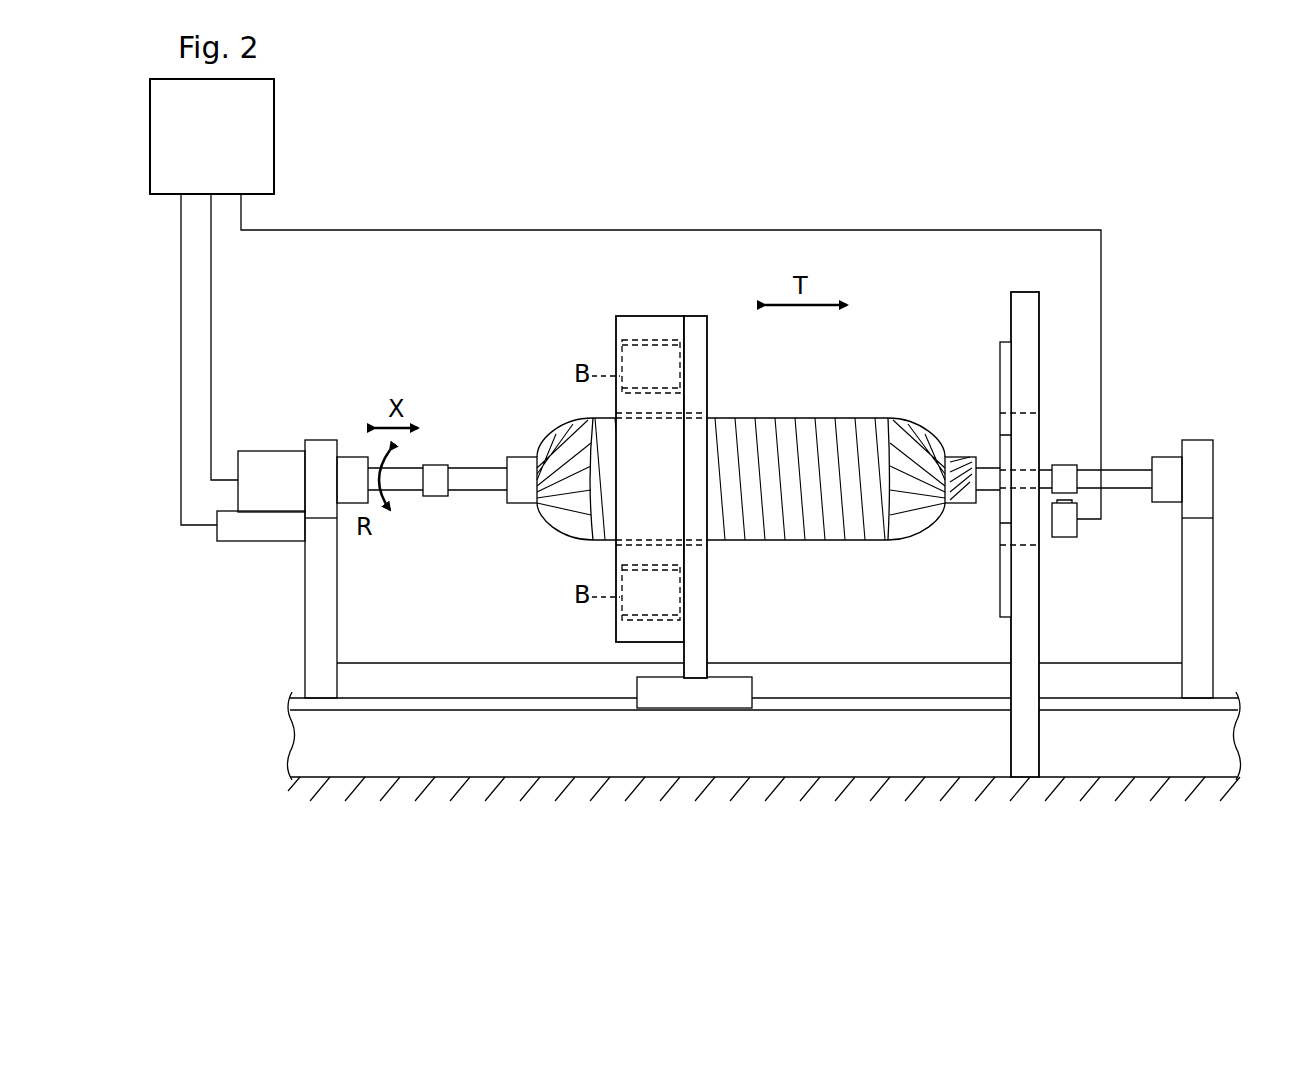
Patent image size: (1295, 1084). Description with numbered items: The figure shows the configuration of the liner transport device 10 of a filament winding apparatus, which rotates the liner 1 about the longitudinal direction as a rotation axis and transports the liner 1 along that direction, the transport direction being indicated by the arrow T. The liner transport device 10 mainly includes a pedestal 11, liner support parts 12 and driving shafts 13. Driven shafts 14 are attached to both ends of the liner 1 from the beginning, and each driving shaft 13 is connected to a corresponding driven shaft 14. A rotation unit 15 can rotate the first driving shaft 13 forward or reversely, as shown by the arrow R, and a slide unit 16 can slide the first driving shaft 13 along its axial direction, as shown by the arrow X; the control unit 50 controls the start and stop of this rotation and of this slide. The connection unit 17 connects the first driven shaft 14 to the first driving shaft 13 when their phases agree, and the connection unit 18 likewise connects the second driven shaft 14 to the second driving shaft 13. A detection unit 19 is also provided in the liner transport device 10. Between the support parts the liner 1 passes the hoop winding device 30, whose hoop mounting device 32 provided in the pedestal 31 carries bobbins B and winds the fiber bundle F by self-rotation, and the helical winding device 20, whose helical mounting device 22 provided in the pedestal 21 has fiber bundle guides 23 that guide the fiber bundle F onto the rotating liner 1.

The liner 1 is at (796, 410).
The liner transport device 10 is at (1147, 253).
The pedestal 11 is at (756, 662).
The liner support part 12 is at (310, 567).
The driving shafts 13 is at (406, 498).
The driven shafts 14 is at (481, 498).
The rotation unit 15 is at (270, 448).
The slide unit 16 is at (226, 532).
The connection unit 17 is at (438, 464).
The connection unit 18 is at (1056, 464).
The detection unit 19 is at (1063, 538).
The helical winding device 20 is at (1001, 511).
The pedestal 21 is at (1026, 294).
The helical mounting device 22 is at (1000, 383).
The fiber bundle guides 23 is at (999, 427).
The hoop winding device 30 is at (644, 473).
The pedestal 31 is at (700, 315).
The hoop mounting device 32 is at (650, 313).
The control unit 50 is at (224, 150).